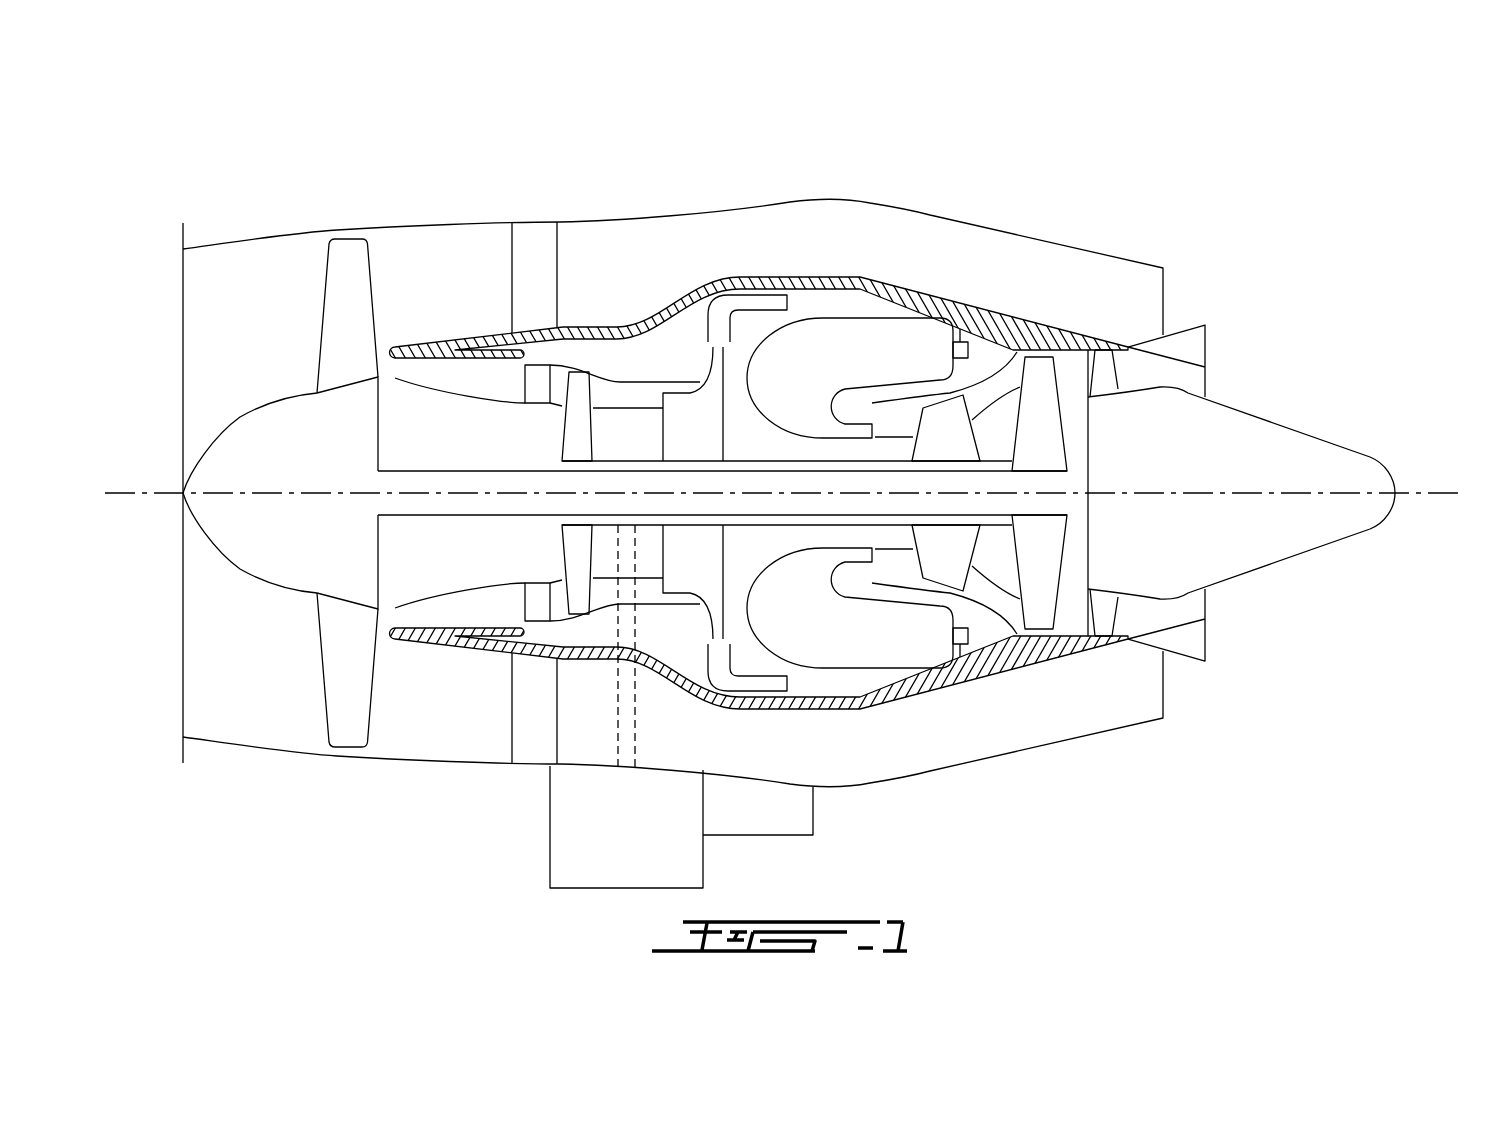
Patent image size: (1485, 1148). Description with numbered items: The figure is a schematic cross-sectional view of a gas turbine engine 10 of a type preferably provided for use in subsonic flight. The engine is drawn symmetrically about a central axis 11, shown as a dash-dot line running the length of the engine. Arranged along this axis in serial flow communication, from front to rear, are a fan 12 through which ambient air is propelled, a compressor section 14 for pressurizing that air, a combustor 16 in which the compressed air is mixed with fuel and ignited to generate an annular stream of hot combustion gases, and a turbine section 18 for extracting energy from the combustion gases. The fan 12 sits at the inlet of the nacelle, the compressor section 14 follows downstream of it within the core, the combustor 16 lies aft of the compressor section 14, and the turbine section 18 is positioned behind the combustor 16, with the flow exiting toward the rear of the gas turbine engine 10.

The gas turbine engine 10 is at (982, 191).
The central longitudinal axis 11 is at (1437, 493).
The fan 12 is at (343, 662).
The compressor section 14 is at (615, 387).
The combustor 16 is at (852, 340).
The turbine section 18 is at (993, 565).